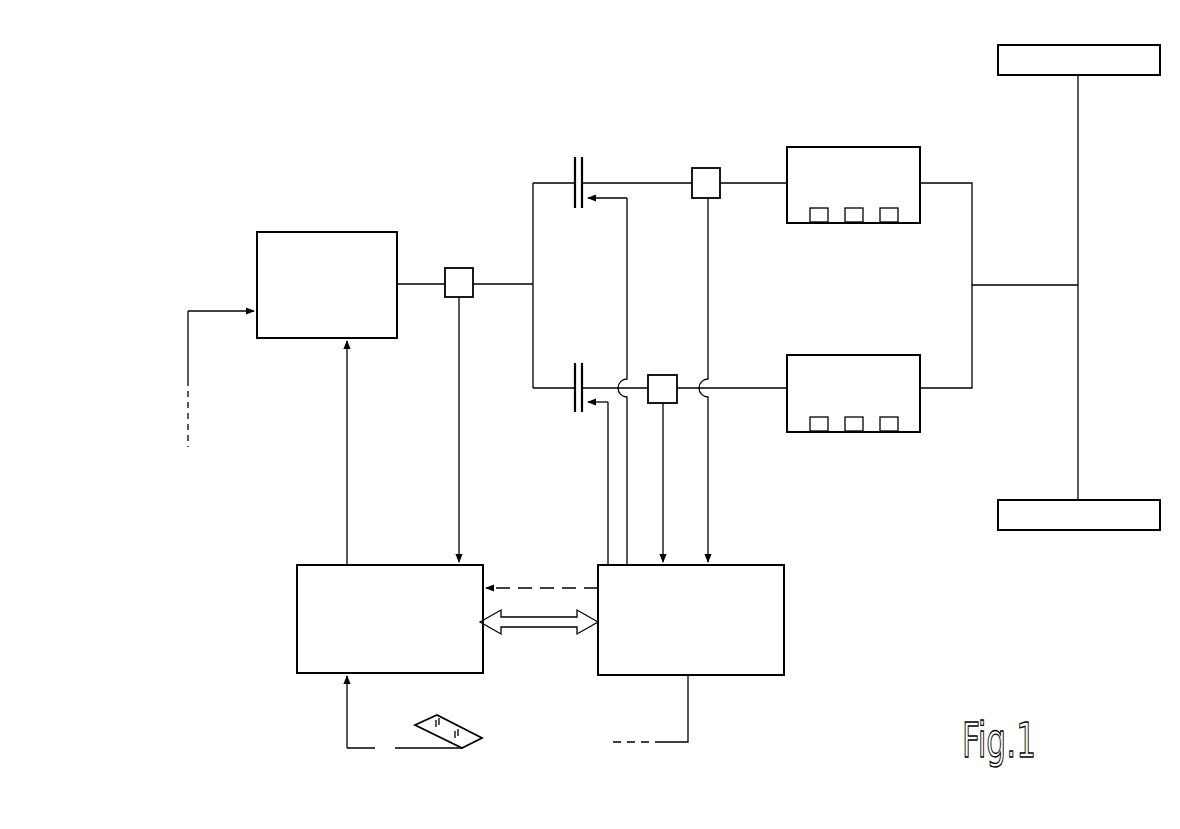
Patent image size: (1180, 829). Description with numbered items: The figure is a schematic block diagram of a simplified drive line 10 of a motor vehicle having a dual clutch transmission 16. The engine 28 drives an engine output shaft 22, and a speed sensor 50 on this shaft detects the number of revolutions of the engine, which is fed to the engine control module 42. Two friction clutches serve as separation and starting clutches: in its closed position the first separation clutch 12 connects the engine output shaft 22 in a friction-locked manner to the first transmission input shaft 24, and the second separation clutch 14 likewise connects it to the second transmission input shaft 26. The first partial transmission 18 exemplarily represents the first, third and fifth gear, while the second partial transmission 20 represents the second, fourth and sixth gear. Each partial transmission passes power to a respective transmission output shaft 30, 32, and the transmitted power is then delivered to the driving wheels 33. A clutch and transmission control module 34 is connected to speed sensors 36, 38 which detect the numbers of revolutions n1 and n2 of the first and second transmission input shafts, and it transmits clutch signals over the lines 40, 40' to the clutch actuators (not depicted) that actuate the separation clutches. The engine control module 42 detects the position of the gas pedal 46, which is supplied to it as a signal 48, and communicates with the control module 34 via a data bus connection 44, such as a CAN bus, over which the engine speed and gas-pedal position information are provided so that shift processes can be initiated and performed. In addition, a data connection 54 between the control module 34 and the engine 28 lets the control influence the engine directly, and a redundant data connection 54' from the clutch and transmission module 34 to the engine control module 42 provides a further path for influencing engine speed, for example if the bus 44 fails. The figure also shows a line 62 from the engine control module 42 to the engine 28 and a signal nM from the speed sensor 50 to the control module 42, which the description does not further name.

The drive line 10 is at (415, 166).
The first separation clutch 12 is at (573, 173).
The second separation clutch 14 is at (575, 405).
The dual clutch transmission 16 is at (794, 118).
The first partial transmission 18 is at (843, 188).
The second partial transmission 20 is at (843, 390).
The engine output shaft 22 is at (500, 278).
The first transmission input shaft 24 is at (633, 183).
The second transmission input shaft 26 is at (602, 383).
The engine 28 is at (320, 297).
The first transmission output shaft 30 is at (953, 183).
The second transmission output shaft 32 is at (947, 392).
The driving wheels 33 is at (1067, 71).
The clutch and transmission control module 34 is at (680, 628).
The speed sensor 36 is at (708, 168).
The speed sensor 38 is at (663, 375).
The clutch signal line 40 is at (589, 483).
The clutch signal line 40' is at (599, 381).
The engine control module 42 is at (375, 628).
The data bus connection 44 is at (538, 625).
The gas pedal 46 is at (412, 750).
The gas-pedal position signal 48 is at (345, 719).
The speed sensor 50 is at (459, 268).
The data connection 54 is at (488, 490).
The redundant data connection 54' is at (542, 556).
The engine control line 62 is at (345, 437).
The engine speed nM is at (458, 473).
The number of revolutions of first transmission input shaft n1 is at (708, 511).
The number of revolutions of second transmission input shaft n2 is at (664, 506).